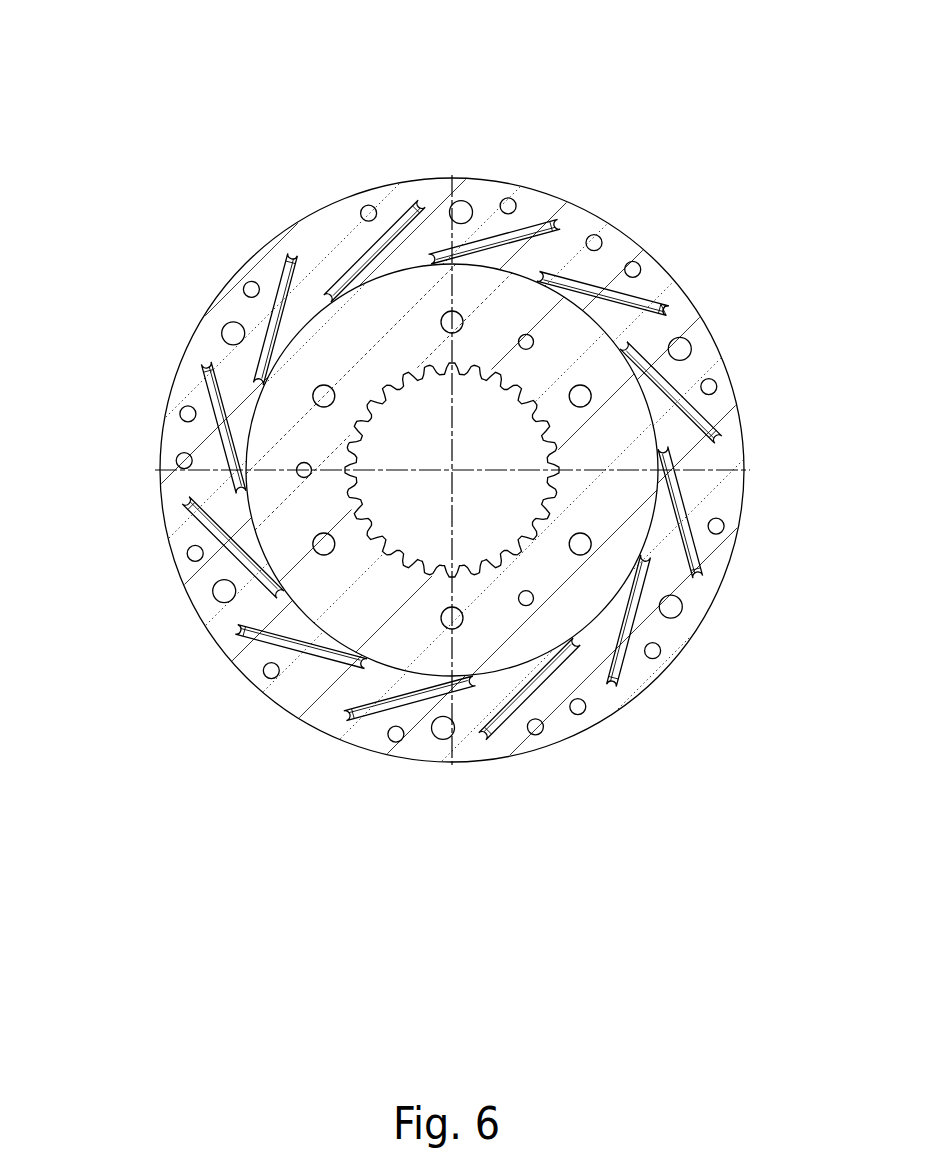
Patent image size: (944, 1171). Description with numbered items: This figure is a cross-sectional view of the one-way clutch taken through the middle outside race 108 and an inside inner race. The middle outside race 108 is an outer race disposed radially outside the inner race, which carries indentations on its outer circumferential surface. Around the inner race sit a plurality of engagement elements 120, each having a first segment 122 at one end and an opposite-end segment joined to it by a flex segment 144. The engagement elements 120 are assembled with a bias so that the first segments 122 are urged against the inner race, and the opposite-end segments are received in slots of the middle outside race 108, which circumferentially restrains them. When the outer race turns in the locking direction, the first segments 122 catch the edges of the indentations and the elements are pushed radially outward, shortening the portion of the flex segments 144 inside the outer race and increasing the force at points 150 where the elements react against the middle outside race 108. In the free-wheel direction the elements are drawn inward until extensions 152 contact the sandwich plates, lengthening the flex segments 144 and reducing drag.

The middle outside race 108 is at (490, 178).
The engagement elements 120 is at (273, 277).
The first segments 122 is at (268, 357).
The flex segments 144 is at (605, 295).
The points 150 is at (668, 470).
The extensions 152 is at (667, 300).